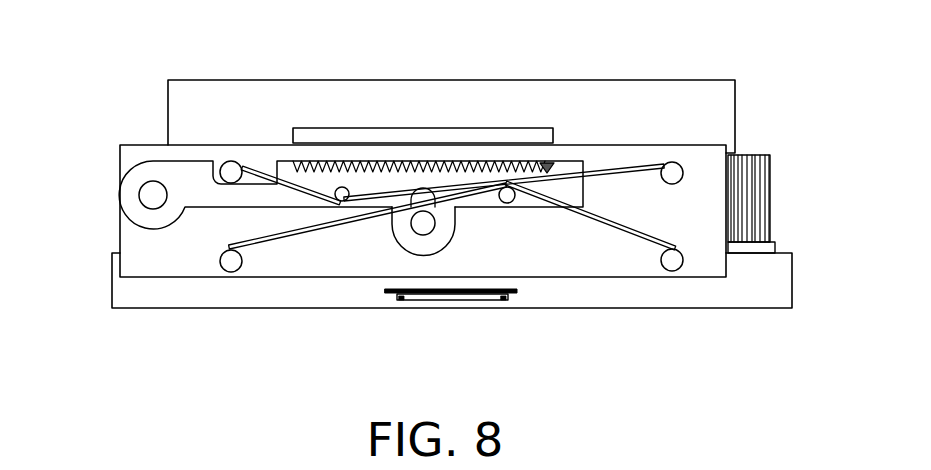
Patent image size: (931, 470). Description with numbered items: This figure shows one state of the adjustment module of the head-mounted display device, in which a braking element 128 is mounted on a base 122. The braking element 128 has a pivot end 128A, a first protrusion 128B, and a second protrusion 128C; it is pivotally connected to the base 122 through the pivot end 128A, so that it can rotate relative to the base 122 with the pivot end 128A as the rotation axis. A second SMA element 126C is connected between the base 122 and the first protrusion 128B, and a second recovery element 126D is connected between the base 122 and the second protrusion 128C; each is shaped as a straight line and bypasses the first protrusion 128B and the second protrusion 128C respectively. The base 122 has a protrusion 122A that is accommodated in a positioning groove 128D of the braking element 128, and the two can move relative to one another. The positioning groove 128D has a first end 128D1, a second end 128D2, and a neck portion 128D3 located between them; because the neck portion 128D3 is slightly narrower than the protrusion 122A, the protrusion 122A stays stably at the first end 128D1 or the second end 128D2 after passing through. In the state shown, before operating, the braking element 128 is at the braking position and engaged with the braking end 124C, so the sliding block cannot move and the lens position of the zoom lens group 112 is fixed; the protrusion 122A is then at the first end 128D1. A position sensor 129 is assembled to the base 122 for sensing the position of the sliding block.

The zoom lens group 112 is at (713, 102).
The base 122 is at (703, 210).
The protrusion 122A is at (422, 222).
The braking end 124C is at (546, 162).
The second SMA element 126C is at (617, 226).
The second recovery element 126D is at (640, 166).
The braking element 128 is at (200, 193).
The pivot end 128A is at (133, 187).
The first protrusion 128B is at (506, 203).
The second protrusion 128C is at (342, 187).
The positioning groove 128D is at (281, 348).
The first end 128D1 is at (418, 256).
The second end 128D2 is at (338, 206).
The neck portion 128D3 is at (430, 184).
The position sensor 129 is at (477, 127).